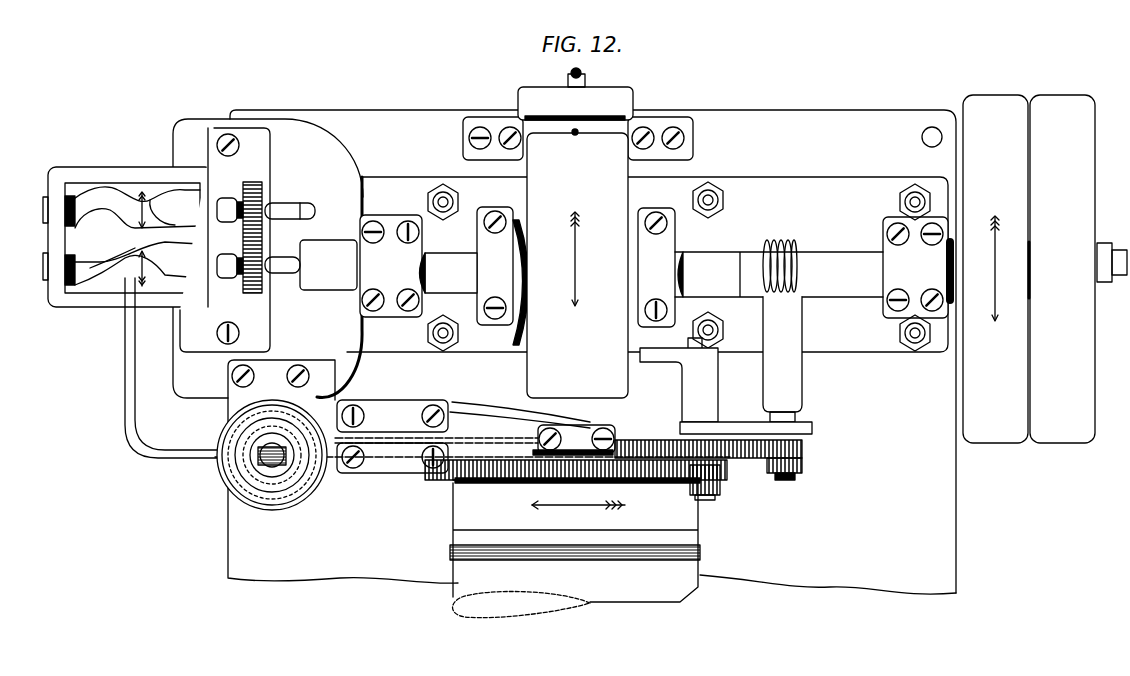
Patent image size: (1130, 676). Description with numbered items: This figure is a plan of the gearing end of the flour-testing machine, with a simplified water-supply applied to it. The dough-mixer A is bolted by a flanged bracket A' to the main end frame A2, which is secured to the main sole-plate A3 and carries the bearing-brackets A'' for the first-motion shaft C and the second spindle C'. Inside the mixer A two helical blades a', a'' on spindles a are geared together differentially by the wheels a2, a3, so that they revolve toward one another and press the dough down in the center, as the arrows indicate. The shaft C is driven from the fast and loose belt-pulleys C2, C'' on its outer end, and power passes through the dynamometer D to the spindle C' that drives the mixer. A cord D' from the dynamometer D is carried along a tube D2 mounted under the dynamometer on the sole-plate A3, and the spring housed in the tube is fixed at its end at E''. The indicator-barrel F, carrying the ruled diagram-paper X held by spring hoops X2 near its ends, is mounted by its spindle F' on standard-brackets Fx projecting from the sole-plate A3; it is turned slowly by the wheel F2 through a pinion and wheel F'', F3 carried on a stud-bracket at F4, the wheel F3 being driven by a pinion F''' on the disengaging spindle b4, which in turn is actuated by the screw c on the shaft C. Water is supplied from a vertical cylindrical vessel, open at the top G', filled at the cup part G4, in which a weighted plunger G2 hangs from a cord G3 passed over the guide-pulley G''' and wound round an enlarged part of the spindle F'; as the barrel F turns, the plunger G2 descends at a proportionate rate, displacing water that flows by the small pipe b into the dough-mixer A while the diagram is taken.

The dough-mixer A is at (128, 224).
The flanged bracket A' is at (225, 240).
The bearing-brackets A'' is at (652, 266).
The main end frame A2 is at (622, 264).
The main sole-plate A3 is at (564, 352).
The spindles a is at (287, 236).
The helical blade a' is at (134, 264).
The helical blade a'' is at (134, 207).
The wheel a2 is at (250, 295).
The wheel a3 is at (253, 181).
The small pipe b is at (131, 328).
The disengaging transmitting-spindle b4 is at (801, 414).
The first-motion shaft C is at (779, 274).
The second spindle C' is at (474, 282).
The loose belt-pulley C'' is at (1078, 269).
The fast belt-pulley C2 is at (989, 269).
The screw c is at (784, 247).
The dynamometer D is at (577, 265).
The cord D' is at (586, 217).
The tube D2 is at (620, 117).
The spring fixing point E'' is at (589, 78).
The indicator-barrel F is at (576, 539).
The spindle F' is at (581, 440).
The pinion F'' is at (717, 484).
The pinion F''' is at (798, 468).
The wheel F2 is at (641, 482).
The wheel F3 is at (748, 457).
The stud-bracket F4 is at (726, 391).
The standard-brackets Fx is at (520, 418).
The open top of water-vessel G' is at (266, 452).
The guide-pulley G''' is at (272, 467).
The plunger G2 is at (252, 486).
The cord G3 is at (390, 462).
The open cup part G4 is at (246, 413).
The diagram-paper X is at (575, 544).
The spring hoops X2 is at (587, 552).